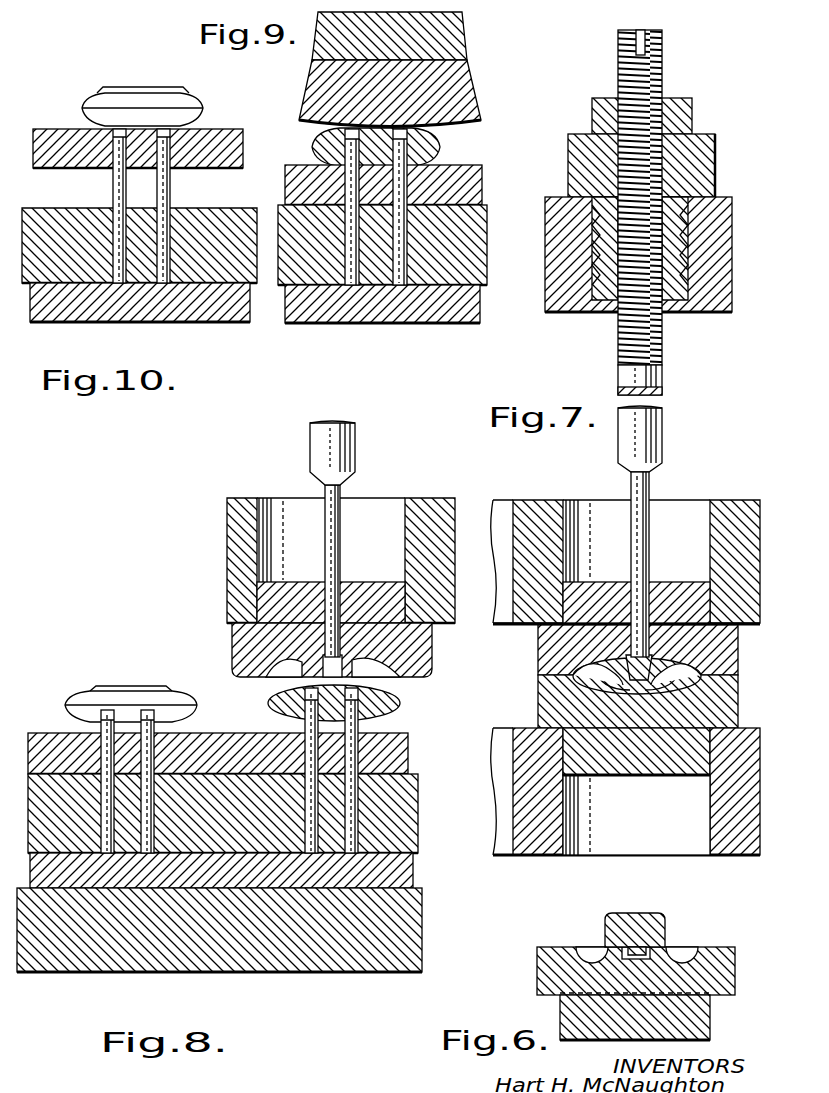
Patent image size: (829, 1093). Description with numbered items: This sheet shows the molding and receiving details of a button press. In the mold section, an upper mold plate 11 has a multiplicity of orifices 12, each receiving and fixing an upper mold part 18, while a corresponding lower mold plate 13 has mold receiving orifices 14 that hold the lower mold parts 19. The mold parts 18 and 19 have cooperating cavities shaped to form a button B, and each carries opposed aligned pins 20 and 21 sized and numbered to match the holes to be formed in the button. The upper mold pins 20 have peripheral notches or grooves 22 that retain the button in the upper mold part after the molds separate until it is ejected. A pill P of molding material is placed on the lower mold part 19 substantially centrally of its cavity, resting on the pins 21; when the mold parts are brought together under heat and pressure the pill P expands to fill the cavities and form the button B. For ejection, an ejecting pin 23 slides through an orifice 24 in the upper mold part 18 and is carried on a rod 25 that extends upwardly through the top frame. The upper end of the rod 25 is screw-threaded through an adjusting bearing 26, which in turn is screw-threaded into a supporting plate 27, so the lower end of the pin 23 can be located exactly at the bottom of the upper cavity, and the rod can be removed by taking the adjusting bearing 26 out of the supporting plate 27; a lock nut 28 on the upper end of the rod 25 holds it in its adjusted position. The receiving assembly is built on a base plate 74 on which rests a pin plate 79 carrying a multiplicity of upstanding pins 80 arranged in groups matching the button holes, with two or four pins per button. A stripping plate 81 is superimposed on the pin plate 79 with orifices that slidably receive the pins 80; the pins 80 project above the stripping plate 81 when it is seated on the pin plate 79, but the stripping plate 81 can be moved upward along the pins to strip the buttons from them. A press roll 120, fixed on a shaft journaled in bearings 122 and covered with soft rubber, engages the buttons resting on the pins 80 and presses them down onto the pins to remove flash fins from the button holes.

In FIG. 7, the mold plate 11 is at (553, 488).
In FIG. 8, the mold plate 11 is at (240, 538).
In FIG. 7, the orifices 12 is at (602, 502).
In FIG. 8, the orifices 12 is at (288, 492).
In FIG. 7, the lower mold plate 13 is at (511, 856).
In FIG. 7, the mold receiving orifices 14 is at (664, 850).
In FIG. 7, the upper mold part 18 is at (715, 652).
In FIG. 8, the upper mold part 18 is at (246, 660).
In FIG. 7, the lower mold part 19 is at (720, 708).
In FIG. 6, the lower mold part 19 is at (540, 960).
In FIG. 7, the upper mold pins 20 is at (608, 664).
In FIG. 8, the upper mold pins 20 is at (345, 677).
In FIG. 7, the lower mold pins 21 is at (610, 776).
In FIG. 6, the lower mold pins 21 is at (626, 950).
In FIG. 7, the peripheral notches or grooves 22 is at (606, 675).
In FIG. 8, the peripheral notches or grooves 22 is at (318, 676).
In FIG. 7, the ejecting pin 23 is at (649, 520).
In FIG. 8, the ejecting pin 23 is at (333, 540).
In FIG. 7, the orifice 24 is at (650, 604).
In FIG. 8, the orifice 24 is at (325, 607).
In FIG. 7, the rod 25 is at (663, 414).
In FIG. 8, the rod 25 is at (347, 455).
In FIG. 7, the adjusting bearing 26 is at (715, 173).
In FIG. 7, the supporting plate 27 is at (732, 266).
In FIG. 7, the lock nut 28 is at (692, 116).
In FIG. 10, the base plate 74 is at (74, 314).
In FIG. 9, the base plate 74 is at (458, 310).
In FIG. 8, the base plate 74 is at (368, 964).
In FIG. 10, the pin plate 79 is at (212, 300).
In FIG. 9, the pin plate 79 is at (420, 300).
In FIG. 8, the pin plate 79 is at (406, 843).
In FIG. 10, the pins 80 is at (165, 190).
In FIG. 9, the pins 80 is at (428, 276).
In FIG. 8, the pins 80 is at (312, 814).
In FIG. 10, the stripping plate 81 is at (203, 132).
In FIG. 9, the stripping plate 81 is at (482, 178).
In FIG. 8, the stripping plate 81 is at (398, 758).
In FIG. 9, the press roll 120 is at (455, 43).
In FIG. 9, the bearings 122 is at (470, 83).
In FIG. 10, the button B is at (88, 102).
In FIG. 9, the button B is at (440, 148).
In FIG. 7, the button B is at (592, 683).
In FIG. 8, the button B is at (96, 690).
In FIG. 6, the pill P is at (613, 912).